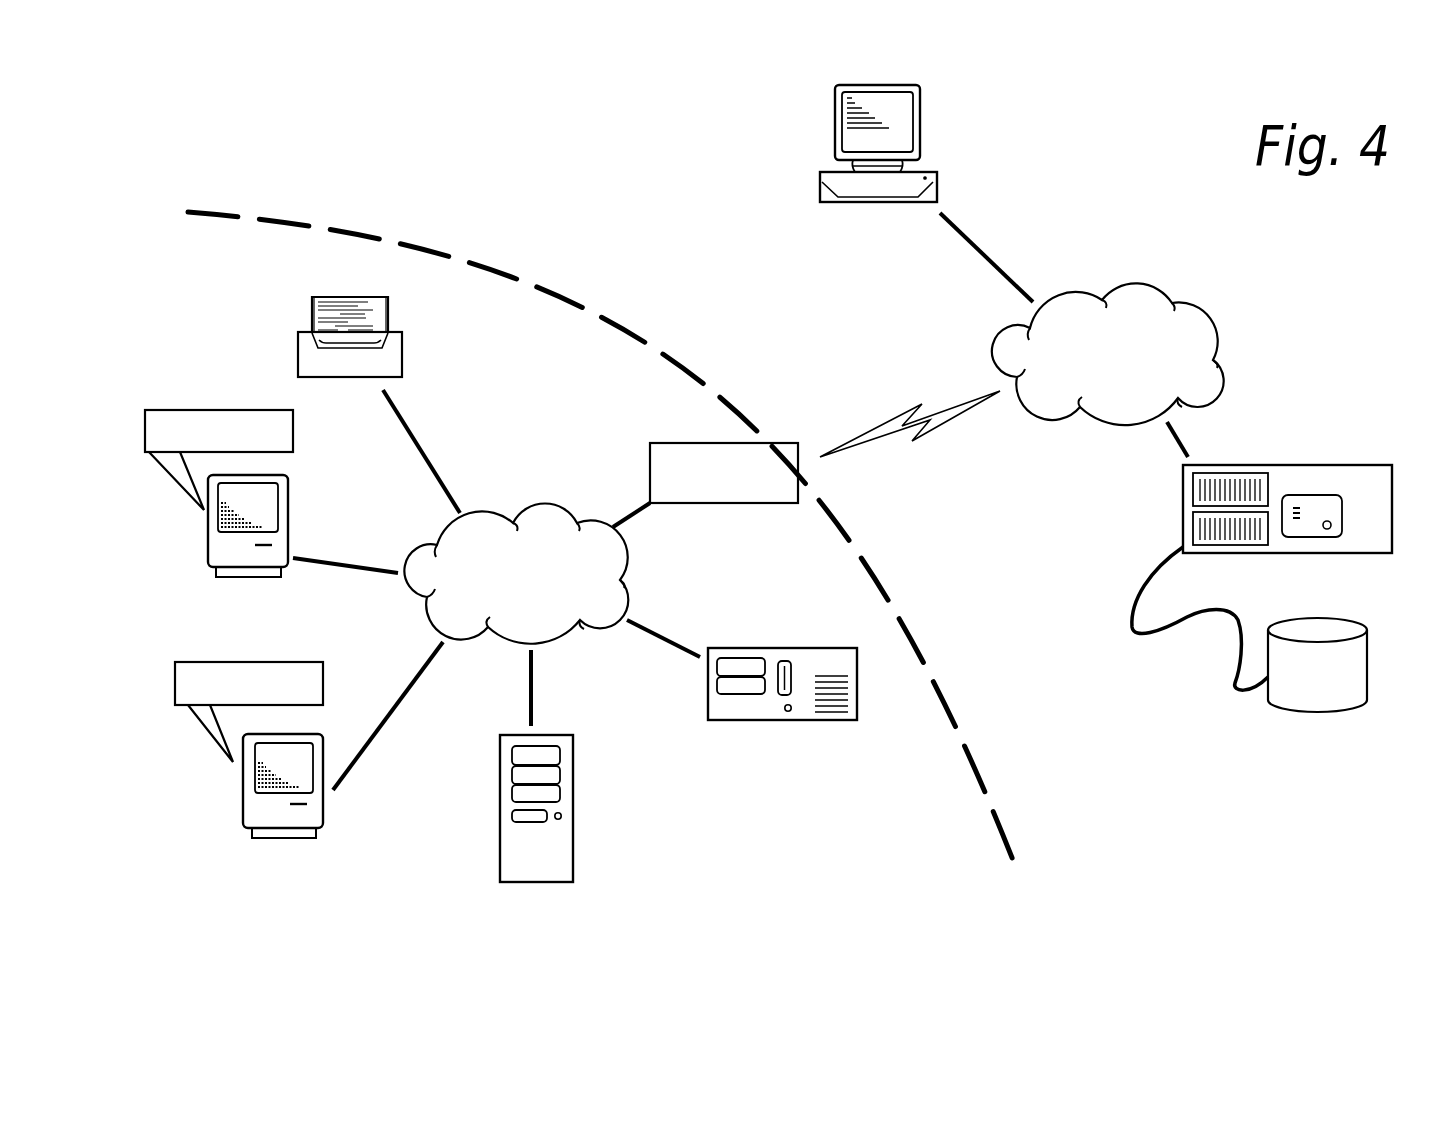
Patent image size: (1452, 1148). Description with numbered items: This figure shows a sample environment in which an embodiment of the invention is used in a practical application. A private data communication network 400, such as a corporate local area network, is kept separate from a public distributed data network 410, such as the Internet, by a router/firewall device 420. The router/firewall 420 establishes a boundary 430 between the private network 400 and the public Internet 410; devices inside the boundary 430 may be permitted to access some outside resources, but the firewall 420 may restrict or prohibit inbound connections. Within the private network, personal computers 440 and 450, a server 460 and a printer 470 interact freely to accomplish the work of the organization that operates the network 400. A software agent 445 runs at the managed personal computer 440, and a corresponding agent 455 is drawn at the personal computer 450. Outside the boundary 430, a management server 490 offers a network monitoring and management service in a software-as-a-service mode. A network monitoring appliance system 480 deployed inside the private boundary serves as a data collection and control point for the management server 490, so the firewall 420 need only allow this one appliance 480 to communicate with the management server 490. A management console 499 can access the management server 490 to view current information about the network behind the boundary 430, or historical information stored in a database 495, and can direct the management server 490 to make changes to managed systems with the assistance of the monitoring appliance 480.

The data communication network 400 is at (608, 604).
The public distributed data network 410 is at (1201, 384).
The router/firewall device 420 is at (650, 445).
The boundary 430 is at (224, 206).
The personal computer 440 is at (210, 563).
The software agent 445 is at (200, 410).
The personal computer 450 is at (246, 825).
The agent 455 is at (323, 668).
The server 460 is at (574, 874).
The printer 470 is at (402, 366).
The network monitoring appliance system 480 is at (850, 721).
The management server 490 is at (1380, 553).
The database 495 is at (1361, 697).
The management console 499 is at (935, 168).